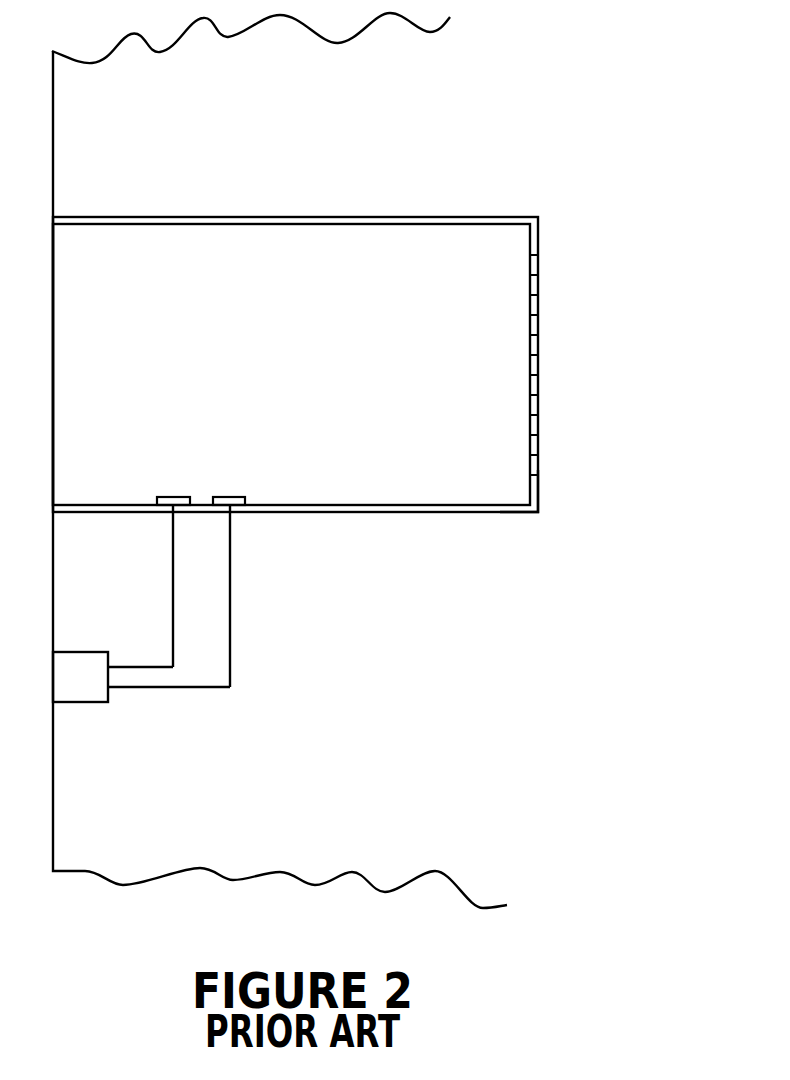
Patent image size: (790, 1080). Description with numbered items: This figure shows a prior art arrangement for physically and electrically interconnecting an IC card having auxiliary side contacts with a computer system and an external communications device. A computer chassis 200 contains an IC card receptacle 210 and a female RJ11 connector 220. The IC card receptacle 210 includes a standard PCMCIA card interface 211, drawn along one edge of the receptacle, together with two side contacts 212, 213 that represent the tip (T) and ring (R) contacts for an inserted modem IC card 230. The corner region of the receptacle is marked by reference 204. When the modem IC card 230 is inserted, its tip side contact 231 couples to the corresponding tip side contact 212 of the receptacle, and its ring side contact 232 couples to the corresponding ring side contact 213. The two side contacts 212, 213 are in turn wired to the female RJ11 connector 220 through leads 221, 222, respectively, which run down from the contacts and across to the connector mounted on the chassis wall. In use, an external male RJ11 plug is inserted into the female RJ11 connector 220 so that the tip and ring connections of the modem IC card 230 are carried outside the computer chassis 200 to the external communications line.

The computer chassis 200 is at (279, 460).
The IC card receptacle 210 is at (393, 218).
The standard PCMCIA card interface 211 is at (540, 418).
The card slot corner 204 is at (537, 457).
The modem IC card 230 is at (286, 369).
The tip side contact 231 is at (178, 497).
The ring side contact 232 is at (235, 497).
The tip side contact 212 is at (173, 527).
The ring side contact 213 is at (232, 525).
The lead 221 is at (168, 672).
The lead 222 is at (230, 688).
The female RJ11 connector 220 is at (93, 703).